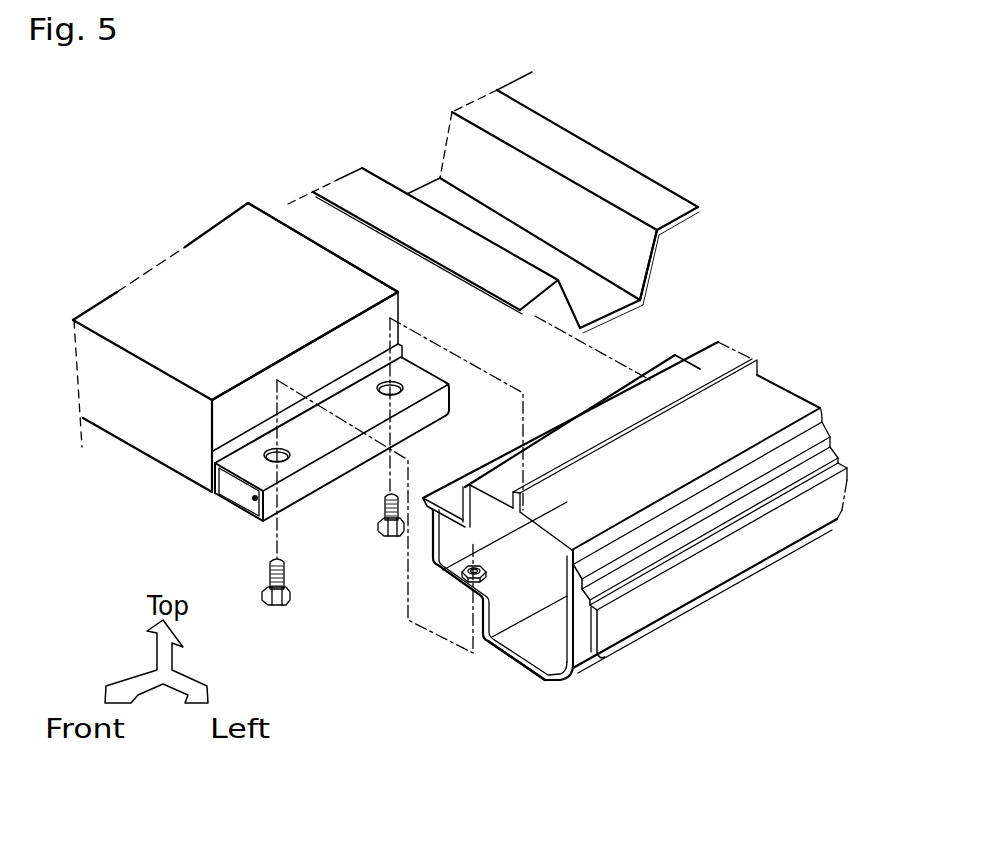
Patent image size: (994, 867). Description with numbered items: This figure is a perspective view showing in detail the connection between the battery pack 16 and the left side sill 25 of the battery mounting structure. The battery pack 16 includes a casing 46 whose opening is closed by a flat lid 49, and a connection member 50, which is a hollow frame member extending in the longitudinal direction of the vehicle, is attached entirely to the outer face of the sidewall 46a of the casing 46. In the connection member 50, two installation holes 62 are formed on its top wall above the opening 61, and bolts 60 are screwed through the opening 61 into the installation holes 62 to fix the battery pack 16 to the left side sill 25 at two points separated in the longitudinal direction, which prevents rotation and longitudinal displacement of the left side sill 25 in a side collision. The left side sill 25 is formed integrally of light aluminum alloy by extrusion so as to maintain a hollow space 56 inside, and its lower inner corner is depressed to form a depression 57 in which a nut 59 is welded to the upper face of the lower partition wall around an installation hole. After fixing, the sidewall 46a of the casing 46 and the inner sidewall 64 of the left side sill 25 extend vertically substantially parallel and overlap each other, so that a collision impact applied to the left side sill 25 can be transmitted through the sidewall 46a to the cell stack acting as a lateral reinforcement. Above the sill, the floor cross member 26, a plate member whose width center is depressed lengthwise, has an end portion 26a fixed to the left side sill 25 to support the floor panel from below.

The battery pack 16 is at (117, 292).
The lid 49 is at (200, 246).
The casing 46 is at (165, 470).
The sidewall 46a is at (322, 362).
The connection member 50 is at (305, 493).
The opening 61 is at (253, 498).
The installation holes 62 is at (397, 384).
The bolts 60 is at (270, 600).
The floor cross member 26 is at (675, 195).
The end portion 26a is at (667, 233).
The left side sill 25 is at (780, 385).
The inner sidewall 64 is at (433, 528).
The depression 57 is at (449, 584).
The nut 59 is at (487, 574).
The hollow space 56 is at (565, 612).